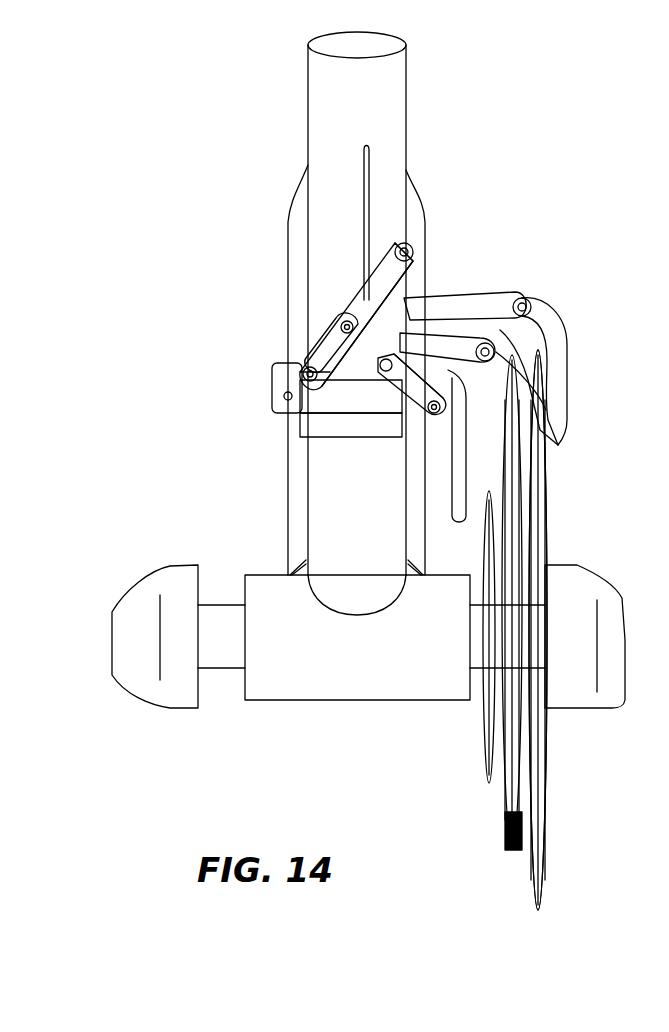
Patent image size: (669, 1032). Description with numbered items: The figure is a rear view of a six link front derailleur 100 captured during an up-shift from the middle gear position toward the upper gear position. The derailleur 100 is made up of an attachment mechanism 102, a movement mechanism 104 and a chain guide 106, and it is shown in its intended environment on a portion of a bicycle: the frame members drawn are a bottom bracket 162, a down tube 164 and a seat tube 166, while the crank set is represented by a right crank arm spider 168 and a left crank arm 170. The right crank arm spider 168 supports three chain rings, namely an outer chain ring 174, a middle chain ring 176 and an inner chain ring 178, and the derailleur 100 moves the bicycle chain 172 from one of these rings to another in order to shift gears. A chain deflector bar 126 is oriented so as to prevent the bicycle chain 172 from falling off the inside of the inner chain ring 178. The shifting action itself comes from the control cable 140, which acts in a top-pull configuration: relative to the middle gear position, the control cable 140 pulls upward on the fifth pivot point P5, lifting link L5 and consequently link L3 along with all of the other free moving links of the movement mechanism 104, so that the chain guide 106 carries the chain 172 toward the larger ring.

The six link front derailleur 100 is at (546, 193).
The attachment mechanism 102 is at (272, 394).
The movement mechanism 104 is at (440, 312).
The chain guide 106 is at (567, 358).
The chain deflector bar 126 is at (463, 524).
The control cable 140 is at (365, 175).
The bottom bracket 162 is at (372, 659).
The down tube 164 is at (288, 290).
The seat tube 166 is at (372, 516).
The right crank arm spider 168 is at (590, 642).
The left crank arm 170 is at (157, 641).
The bicycle chain 172 is at (535, 403).
The outer chain ring 174 is at (538, 888).
The middle chain ring 176 is at (506, 828).
The inner chain ring 178 is at (483, 745).
The link L3 is at (362, 367).
The link L5 is at (413, 395).
The fifth pivot point P5 is at (386, 372).